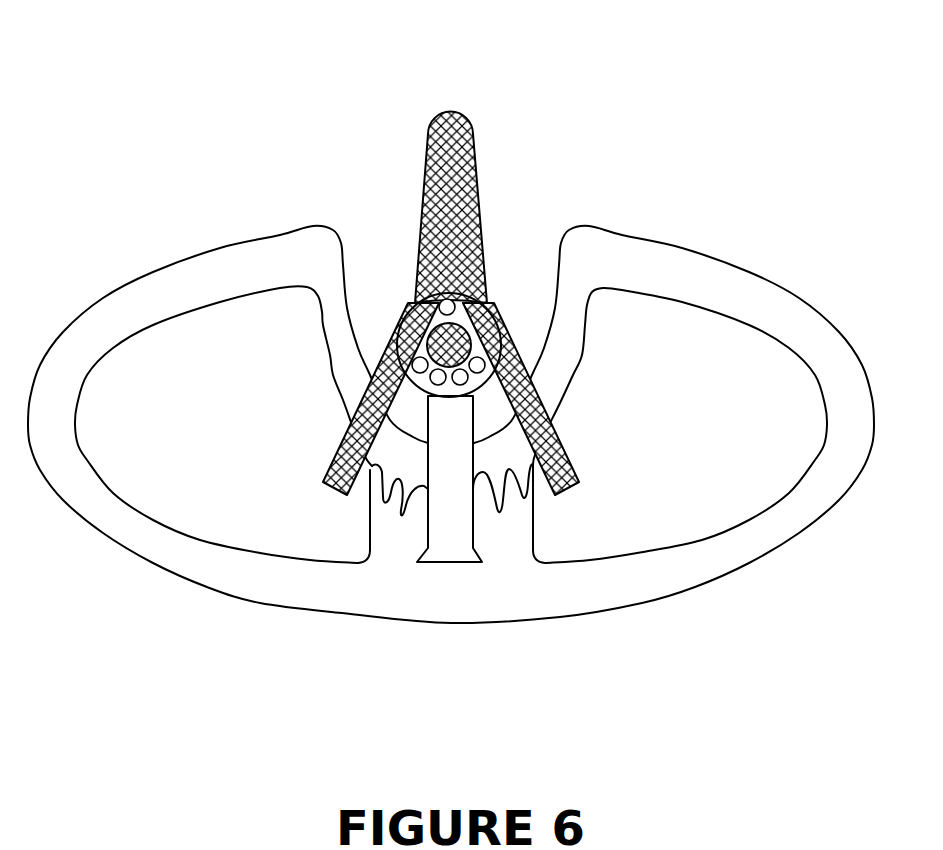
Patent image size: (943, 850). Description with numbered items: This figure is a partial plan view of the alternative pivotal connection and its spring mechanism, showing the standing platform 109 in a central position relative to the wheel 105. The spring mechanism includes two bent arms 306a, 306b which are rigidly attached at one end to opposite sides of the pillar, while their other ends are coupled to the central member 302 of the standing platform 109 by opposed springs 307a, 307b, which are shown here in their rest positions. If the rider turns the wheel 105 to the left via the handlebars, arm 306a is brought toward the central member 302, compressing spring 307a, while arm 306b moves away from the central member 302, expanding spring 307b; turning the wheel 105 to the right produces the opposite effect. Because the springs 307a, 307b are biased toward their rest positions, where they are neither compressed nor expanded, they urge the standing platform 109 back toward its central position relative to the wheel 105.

The wheel 105 is at (474, 138).
The standing platform 109 is at (737, 297).
The central member 302 is at (453, 552).
The bent arm 306a is at (335, 458).
The bent arm 306b is at (580, 488).
The spring 307a is at (400, 527).
The spring 307b is at (502, 515).